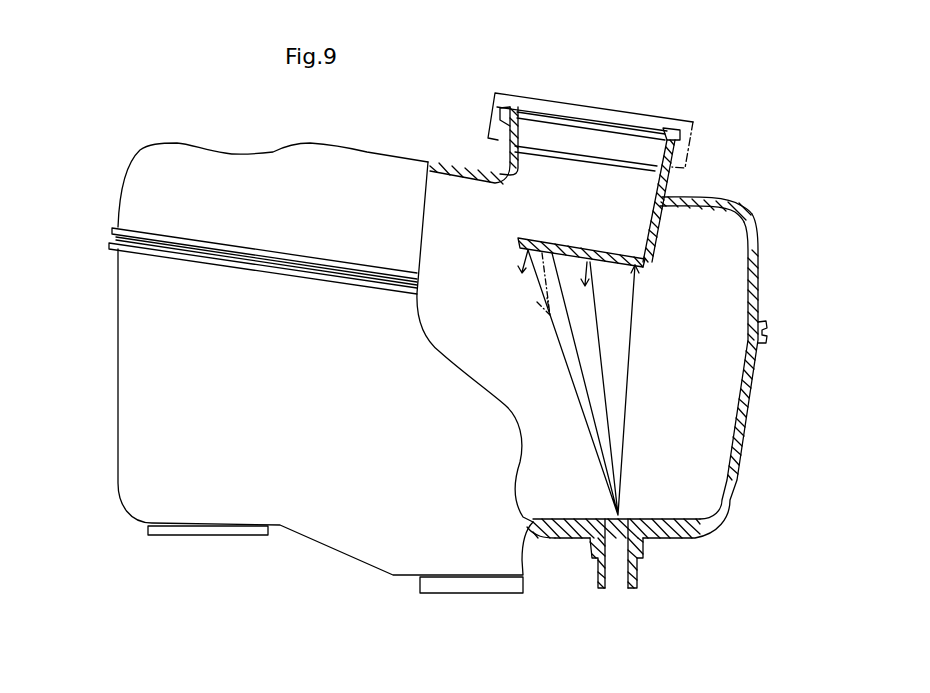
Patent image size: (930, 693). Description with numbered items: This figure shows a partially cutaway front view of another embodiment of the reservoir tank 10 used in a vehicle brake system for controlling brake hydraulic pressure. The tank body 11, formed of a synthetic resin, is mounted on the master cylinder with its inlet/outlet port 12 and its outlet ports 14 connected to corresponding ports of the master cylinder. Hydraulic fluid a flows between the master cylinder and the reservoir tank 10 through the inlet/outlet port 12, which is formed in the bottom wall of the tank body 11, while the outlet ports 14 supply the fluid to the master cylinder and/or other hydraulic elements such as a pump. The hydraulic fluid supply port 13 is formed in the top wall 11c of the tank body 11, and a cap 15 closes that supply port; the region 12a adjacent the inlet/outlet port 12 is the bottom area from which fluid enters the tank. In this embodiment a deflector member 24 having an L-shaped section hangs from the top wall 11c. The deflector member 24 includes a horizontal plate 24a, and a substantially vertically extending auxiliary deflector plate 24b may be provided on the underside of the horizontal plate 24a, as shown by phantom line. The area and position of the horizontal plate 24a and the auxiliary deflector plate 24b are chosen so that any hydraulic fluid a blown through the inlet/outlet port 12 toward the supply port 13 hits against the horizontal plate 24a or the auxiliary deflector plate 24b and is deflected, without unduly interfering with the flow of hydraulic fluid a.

The reservoir tank 10 is at (116, 392).
The tank body 11 is at (757, 230).
The top wall 11c is at (698, 198).
The inlet/outlet port 12 is at (625, 578).
The bottom wall 12a is at (620, 515).
The hydraulic fluid supply port 13 is at (627, 135).
The outlet port 14 is at (203, 536).
The cap 15 is at (693, 121).
The deflector member 24 is at (653, 240).
The horizontal plate 24a is at (607, 260).
The auxiliary deflector plate 24b is at (553, 323).
The hydraulic fluid a is at (587, 418).